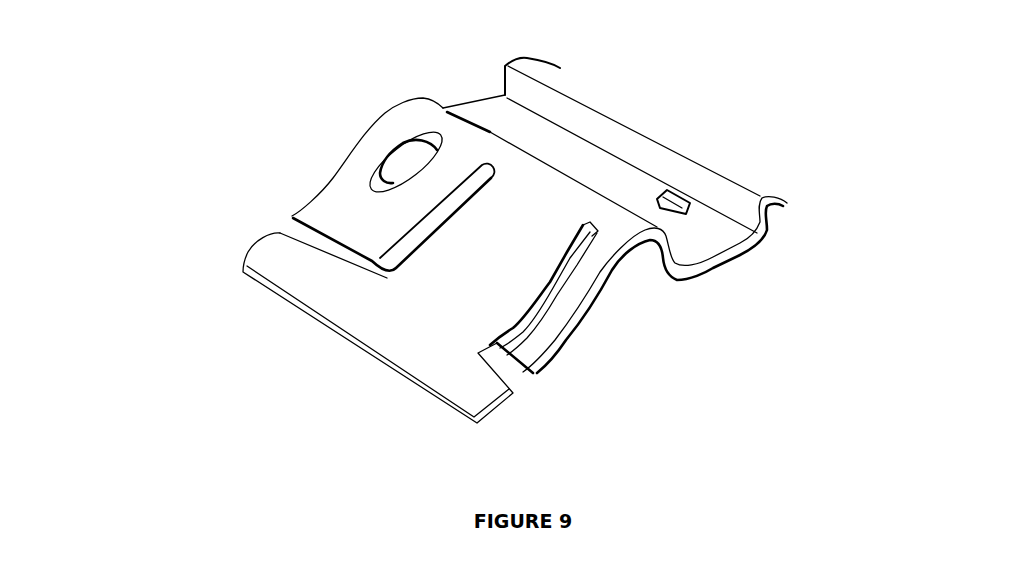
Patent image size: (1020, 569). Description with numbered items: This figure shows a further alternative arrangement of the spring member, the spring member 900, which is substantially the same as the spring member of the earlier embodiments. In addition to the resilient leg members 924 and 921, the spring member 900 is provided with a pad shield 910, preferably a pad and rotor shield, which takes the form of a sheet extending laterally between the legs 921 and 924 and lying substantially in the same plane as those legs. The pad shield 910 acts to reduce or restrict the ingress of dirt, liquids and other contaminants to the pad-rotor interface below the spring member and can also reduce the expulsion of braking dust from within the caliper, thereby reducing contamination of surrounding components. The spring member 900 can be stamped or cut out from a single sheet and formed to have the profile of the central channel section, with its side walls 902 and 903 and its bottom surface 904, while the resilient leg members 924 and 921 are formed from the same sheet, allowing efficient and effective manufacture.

The spring member 900 is at (440, 83).
The pad shield 910 is at (453, 281).
The resilient leg member 924 is at (353, 217).
The side wall 903 is at (765, 218).
The bottom surface 904 is at (706, 250).
The side wall 902 is at (662, 264).
The resilient leg member 921 is at (537, 343).